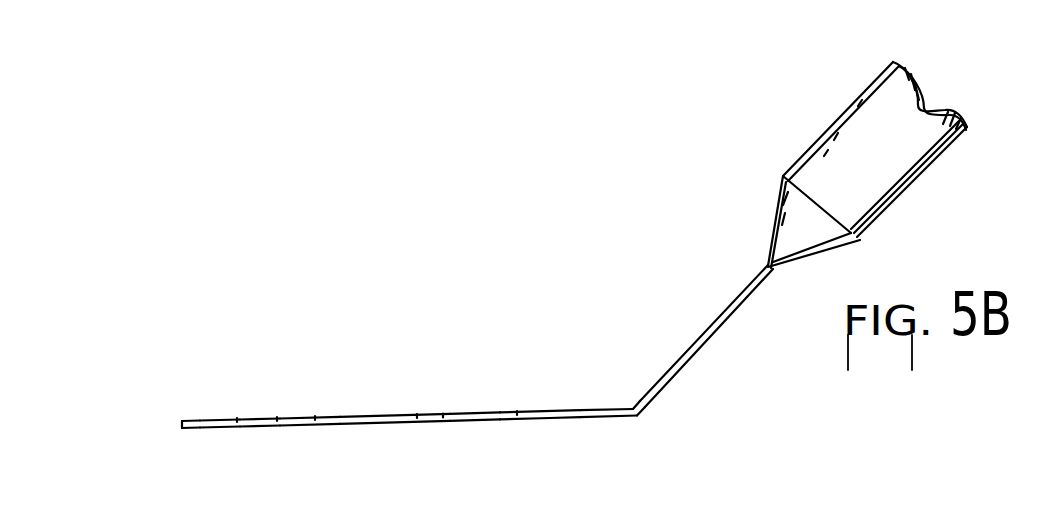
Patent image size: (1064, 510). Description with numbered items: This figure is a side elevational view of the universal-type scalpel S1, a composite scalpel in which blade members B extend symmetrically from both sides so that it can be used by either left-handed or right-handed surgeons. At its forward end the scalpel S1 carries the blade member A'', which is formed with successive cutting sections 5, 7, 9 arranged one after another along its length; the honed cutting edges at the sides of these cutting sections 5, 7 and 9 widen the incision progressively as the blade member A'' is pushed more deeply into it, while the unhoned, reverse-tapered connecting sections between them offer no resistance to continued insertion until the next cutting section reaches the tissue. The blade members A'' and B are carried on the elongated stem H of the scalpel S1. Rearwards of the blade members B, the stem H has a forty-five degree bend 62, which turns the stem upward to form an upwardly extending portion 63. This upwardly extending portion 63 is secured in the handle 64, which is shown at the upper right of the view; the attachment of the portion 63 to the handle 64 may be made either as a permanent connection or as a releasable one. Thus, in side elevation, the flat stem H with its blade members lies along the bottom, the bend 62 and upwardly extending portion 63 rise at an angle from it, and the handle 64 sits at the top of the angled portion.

The cutting section 5 is at (205, 431).
The cutting section 7 is at (257, 427).
The cutting section 9 is at (295, 421).
The bend 62 is at (638, 417).
The upwardly extending portion 63 is at (717, 327).
The handle 64 is at (877, 177).
The blade member A'' is at (187, 389).
The blade member B is at (472, 399).
The stem H is at (563, 411).
The scalpel S1 is at (538, 433).